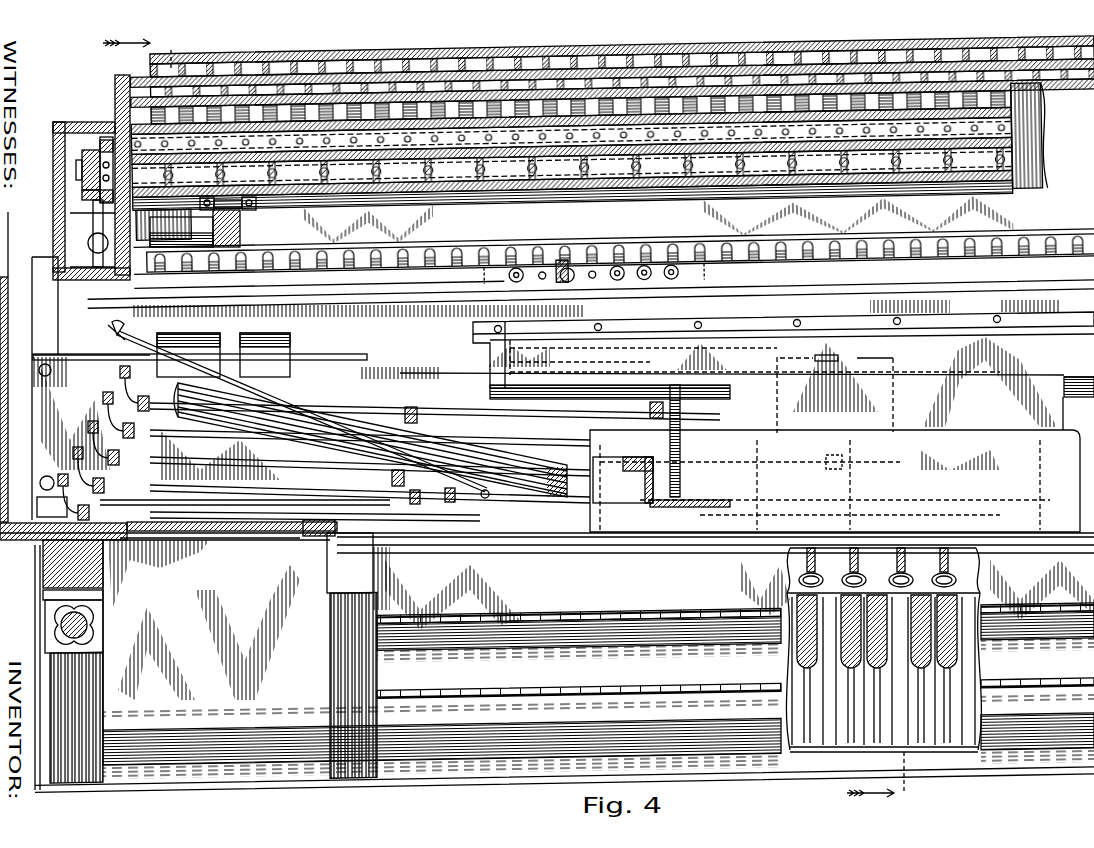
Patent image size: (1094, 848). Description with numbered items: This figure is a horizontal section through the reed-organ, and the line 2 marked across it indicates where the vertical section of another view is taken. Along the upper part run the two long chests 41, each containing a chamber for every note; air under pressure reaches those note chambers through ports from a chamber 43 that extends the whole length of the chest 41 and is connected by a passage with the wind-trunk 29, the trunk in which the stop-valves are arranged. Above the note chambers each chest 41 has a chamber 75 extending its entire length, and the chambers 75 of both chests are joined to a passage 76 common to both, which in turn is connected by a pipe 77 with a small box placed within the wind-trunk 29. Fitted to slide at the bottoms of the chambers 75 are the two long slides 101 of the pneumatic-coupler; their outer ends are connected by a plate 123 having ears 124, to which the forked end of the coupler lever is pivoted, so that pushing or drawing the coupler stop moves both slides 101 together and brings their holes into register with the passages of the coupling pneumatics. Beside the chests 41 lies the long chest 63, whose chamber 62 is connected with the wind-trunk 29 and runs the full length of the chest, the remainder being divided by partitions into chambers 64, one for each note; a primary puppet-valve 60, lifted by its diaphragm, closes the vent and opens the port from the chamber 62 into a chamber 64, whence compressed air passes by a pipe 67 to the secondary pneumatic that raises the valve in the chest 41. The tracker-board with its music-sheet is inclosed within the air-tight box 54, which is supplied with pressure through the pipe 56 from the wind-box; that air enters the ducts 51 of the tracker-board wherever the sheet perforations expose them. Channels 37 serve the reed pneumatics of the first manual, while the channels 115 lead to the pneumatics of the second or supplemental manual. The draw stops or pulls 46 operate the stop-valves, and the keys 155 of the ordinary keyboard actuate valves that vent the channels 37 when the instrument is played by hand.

The section line 2 2 is at (505, 424).
The channel 115 is at (318, 49).
The channels 37 is at (365, 76).
The ears 124 is at (82, 140).
The chamber 75 is at (130, 112).
The wind-trunk 29 is at (70, 153).
The plate 123 is at (78, 165).
The chamber 43 is at (572, 167).
The passage 76 is at (212, 210).
The pipe 77 is at (206, 228).
The long chests 41 is at (400, 197).
The chamber 62 is at (520, 278).
The chamber 64 is at (570, 270).
The pipe 67 is at (770, 256).
The slides 101 is at (975, 132).
The long chest 63 is at (319, 287).
The primary puppet-valve 60 is at (590, 294).
The pipe 56 is at (507, 463).
The ducts 51 is at (610, 460).
The air-tight box or chamber 54 is at (842, 454).
The draw stops or pulls 46 is at (800, 580).
The keys 155 is at (844, 735).